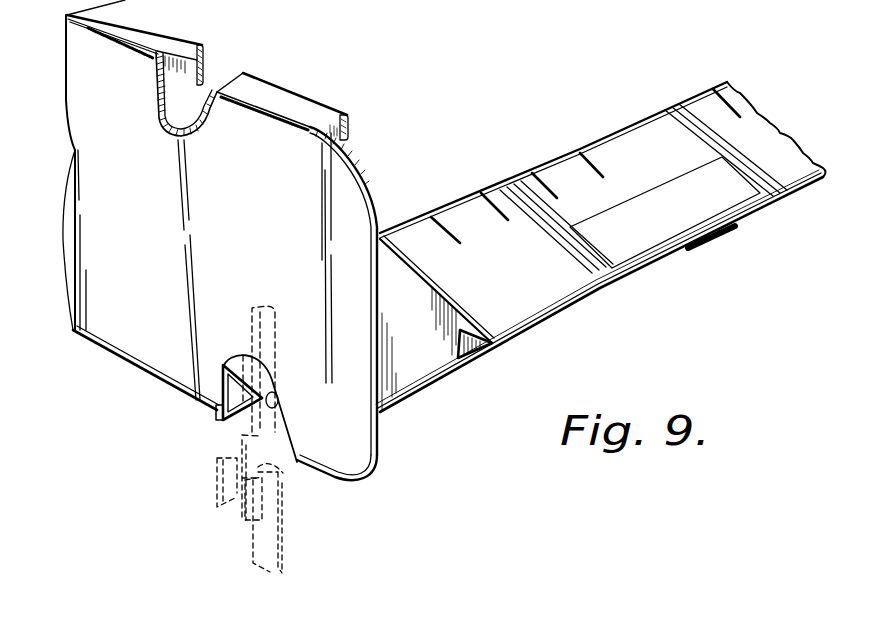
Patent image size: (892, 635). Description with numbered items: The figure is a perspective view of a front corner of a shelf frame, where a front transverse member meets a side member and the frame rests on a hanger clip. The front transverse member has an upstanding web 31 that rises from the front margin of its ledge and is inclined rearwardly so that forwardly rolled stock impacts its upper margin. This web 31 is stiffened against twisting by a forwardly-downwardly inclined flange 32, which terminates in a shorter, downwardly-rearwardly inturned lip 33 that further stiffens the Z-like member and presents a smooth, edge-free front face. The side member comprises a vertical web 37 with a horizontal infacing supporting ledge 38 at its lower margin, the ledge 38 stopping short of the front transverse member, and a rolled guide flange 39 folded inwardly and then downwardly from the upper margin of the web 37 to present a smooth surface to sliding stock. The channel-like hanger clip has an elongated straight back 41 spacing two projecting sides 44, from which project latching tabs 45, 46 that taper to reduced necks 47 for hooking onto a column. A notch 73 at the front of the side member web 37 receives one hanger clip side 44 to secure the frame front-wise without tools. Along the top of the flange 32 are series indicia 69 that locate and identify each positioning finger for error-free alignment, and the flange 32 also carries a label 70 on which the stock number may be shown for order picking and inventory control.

The upstanding web 31 is at (417, 375).
The forwardly-downwardly inclined flange 32 is at (543, 308).
The inturned lip 33 is at (480, 352).
The vertical web 37 is at (127, 345).
The supporting ledge 38 is at (223, 420).
The guide flange 39 is at (288, 102).
The hanger clip web 41 is at (280, 322).
The hanger clip side 44 is at (226, 365).
The latching tab 45 is at (210, 430).
The latching tab 46 is at (283, 488).
The reduced neck 47 is at (219, 493).
The series indicia 69 is at (497, 213).
The label 70 is at (670, 229).
The notch 73 is at (278, 397).